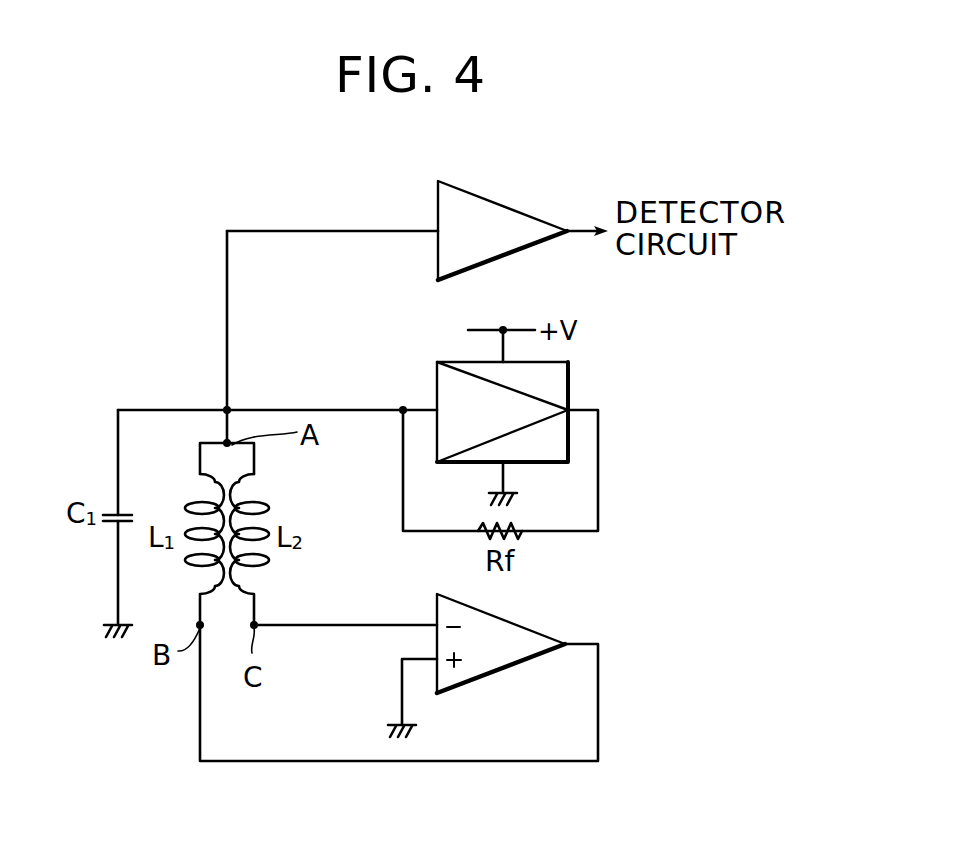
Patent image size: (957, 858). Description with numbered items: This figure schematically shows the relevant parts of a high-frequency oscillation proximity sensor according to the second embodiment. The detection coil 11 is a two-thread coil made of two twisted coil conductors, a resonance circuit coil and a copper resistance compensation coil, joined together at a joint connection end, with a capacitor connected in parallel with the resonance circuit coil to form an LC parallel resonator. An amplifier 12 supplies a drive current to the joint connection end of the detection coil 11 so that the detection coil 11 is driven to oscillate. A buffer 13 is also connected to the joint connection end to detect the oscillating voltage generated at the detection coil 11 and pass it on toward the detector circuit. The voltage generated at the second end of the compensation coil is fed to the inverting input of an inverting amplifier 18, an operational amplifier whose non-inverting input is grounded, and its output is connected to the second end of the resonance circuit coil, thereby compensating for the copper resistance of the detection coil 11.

The detection coil 11 is at (305, 573).
The amplifier 12 is at (568, 378).
The buffer 13 is at (438, 206).
The inverting amplifier 18 is at (520, 626).